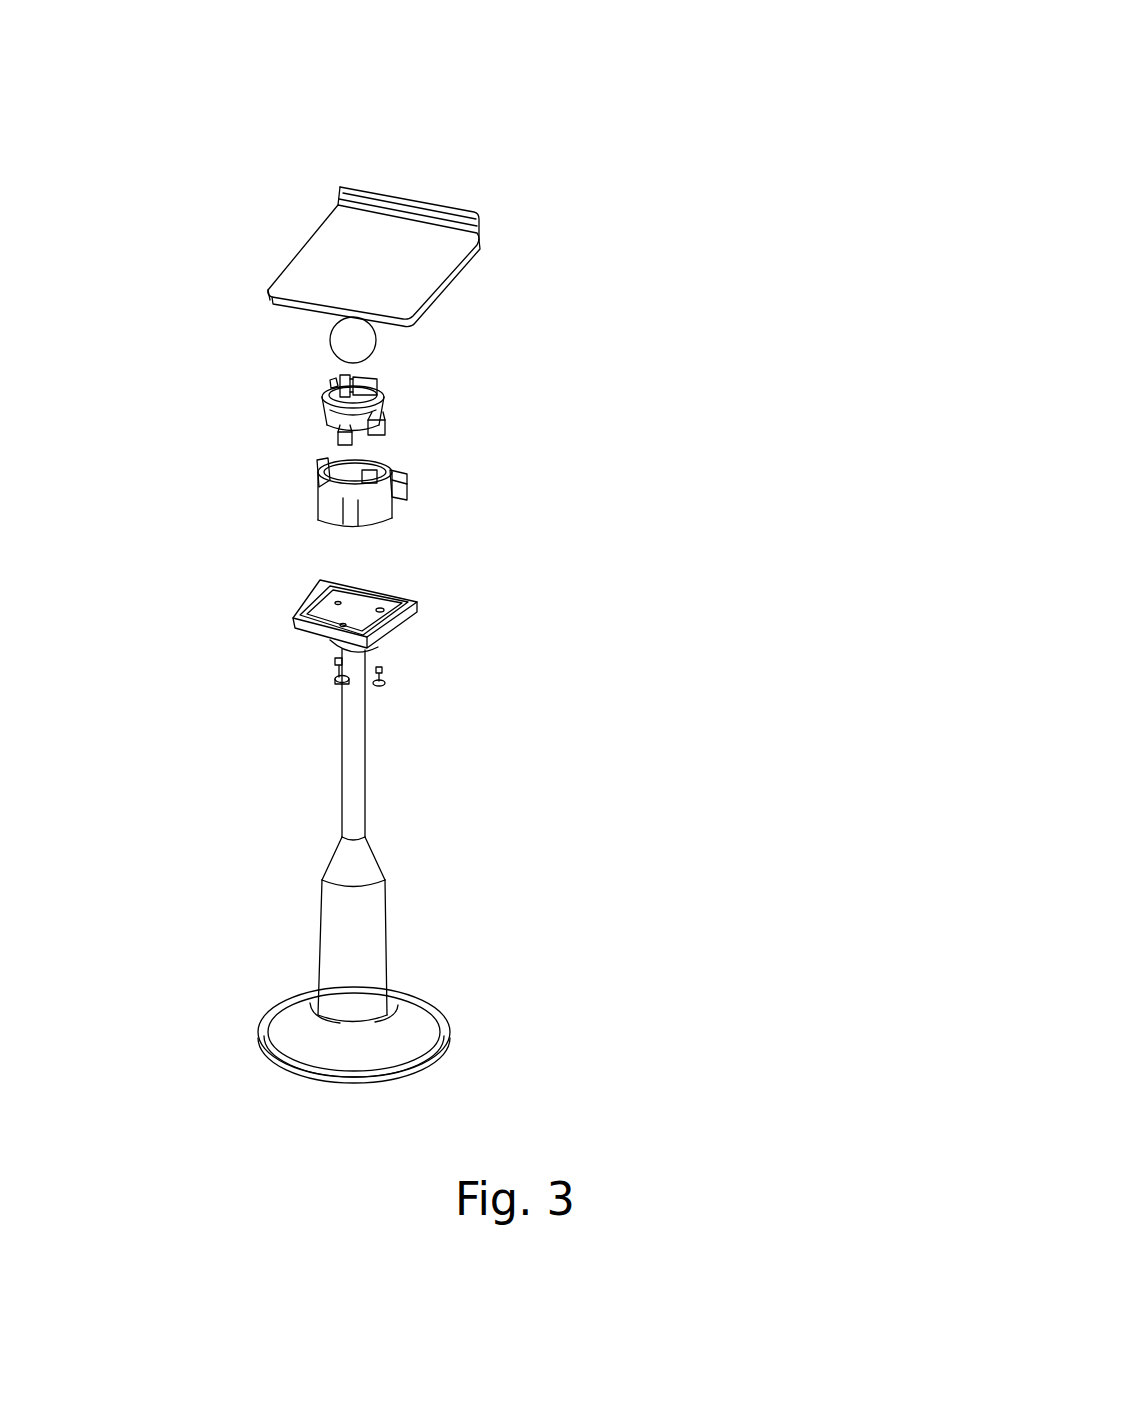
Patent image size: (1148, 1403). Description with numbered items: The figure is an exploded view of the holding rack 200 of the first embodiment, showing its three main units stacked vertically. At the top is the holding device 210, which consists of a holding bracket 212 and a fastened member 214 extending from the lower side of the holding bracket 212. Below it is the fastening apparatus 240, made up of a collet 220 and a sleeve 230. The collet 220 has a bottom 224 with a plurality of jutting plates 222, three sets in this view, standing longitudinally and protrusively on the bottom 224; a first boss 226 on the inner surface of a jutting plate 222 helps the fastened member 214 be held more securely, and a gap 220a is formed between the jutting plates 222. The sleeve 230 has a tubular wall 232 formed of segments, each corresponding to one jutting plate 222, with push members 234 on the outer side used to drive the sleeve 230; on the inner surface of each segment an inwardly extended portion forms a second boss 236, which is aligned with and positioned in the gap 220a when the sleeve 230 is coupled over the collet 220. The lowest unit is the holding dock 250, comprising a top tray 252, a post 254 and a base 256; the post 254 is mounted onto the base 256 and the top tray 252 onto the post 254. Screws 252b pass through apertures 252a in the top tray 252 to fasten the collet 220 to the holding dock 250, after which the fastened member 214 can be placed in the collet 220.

The holding rack 200 is at (526, 560).
The holding device 210 is at (564, 186).
The holding bracket 212 is at (423, 248).
The fastened member 214 is at (370, 338).
The collet 220 is at (467, 344).
The gap 220a is at (333, 378).
The jutting plates 222 is at (385, 380).
The bottom 224 is at (383, 413).
The first boss 226 is at (385, 383).
The sleeve 230 is at (569, 544).
The tubular wall 232 is at (372, 520).
The push members 234 is at (407, 493).
The second boss 236 is at (330, 463).
The fastening apparatus 240 is at (526, 441).
The holding dock 250 is at (556, 831).
The top tray 252 is at (393, 623).
The apertures 252a is at (385, 610).
The screws 252b is at (383, 677).
The post 254 is at (353, 800).
The base 256 is at (403, 1035).